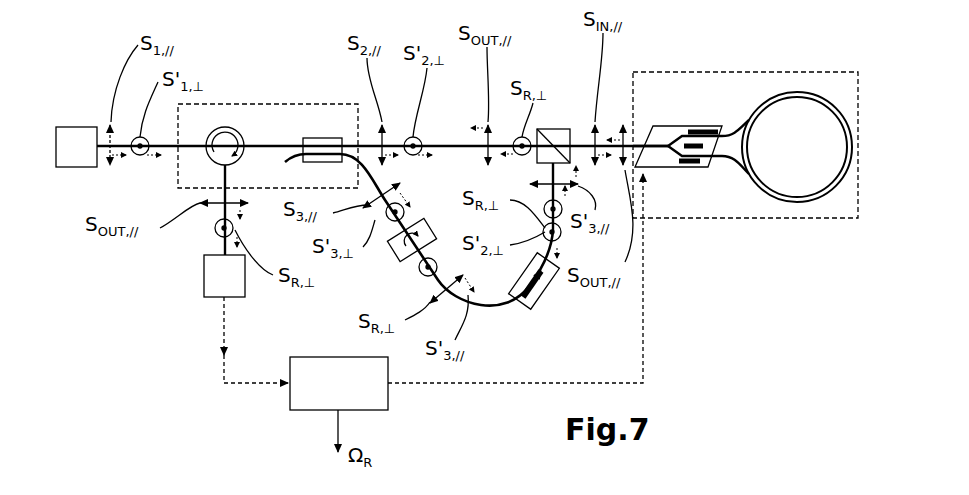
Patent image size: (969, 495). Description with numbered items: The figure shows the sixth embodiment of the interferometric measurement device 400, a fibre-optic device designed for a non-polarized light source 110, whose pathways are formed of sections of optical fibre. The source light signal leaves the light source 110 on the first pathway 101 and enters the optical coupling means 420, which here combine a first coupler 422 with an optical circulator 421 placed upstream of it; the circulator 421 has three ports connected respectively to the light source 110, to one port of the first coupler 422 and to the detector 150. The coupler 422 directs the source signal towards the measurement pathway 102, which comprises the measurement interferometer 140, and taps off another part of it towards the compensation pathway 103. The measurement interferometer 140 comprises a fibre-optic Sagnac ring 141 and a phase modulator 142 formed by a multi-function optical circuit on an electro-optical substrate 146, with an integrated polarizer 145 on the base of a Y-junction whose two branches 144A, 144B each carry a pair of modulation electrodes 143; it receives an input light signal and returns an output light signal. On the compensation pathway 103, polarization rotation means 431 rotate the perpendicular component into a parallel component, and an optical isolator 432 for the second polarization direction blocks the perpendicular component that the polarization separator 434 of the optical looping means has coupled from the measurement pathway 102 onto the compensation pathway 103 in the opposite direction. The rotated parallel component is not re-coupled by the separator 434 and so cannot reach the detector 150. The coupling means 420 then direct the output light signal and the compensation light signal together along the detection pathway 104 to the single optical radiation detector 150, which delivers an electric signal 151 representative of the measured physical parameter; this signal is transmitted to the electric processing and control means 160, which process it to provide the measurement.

The light source 110 is at (67, 127).
The first pathway 101 is at (168, 160).
The optical coupling means 420 is at (338, 100).
The optical circulator 421 is at (221, 127).
The first coupler 422 is at (305, 138).
The measurement pathway 102 is at (446, 143).
The polarization separator 434 is at (553, 128).
The compensation pathway 103 is at (483, 310).
The polarization rotation means 431 is at (397, 258).
The optical isolator 432 is at (540, 308).
The detection pathway 104 is at (223, 210).
The optical radiation detector 150 is at (204, 275).
The electric signal 151 is at (241, 362).
The electric processing and control means 160 is at (310, 410).
The measurement interferometer 140 is at (803, 222).
The electro-optical substrate 146 is at (670, 127).
The integrated polarizer 145 is at (652, 175).
The phase modulator 142 is at (718, 132).
The modulation electrodes 143 is at (727, 158).
The branch of the Y-junction 144A is at (685, 130).
The branch of the Y-junction 144B is at (688, 164).
The fibre-optic Sagnac ring 141 is at (797, 91).
The interferometric measurement device 400 is at (173, 387).